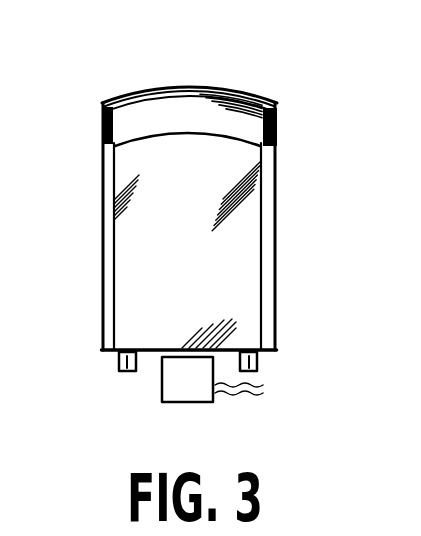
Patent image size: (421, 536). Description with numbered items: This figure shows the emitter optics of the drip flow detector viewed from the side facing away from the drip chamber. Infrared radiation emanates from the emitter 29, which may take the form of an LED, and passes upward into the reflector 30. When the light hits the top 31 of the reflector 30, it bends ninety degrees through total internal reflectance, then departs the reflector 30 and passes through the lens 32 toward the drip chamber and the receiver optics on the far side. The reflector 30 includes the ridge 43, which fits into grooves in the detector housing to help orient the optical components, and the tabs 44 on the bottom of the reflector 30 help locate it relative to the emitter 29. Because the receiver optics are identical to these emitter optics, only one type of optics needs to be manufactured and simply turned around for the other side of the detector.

The emitter 29 is at (177, 402).
The reflector 30 is at (250, 268).
The top of the reflector 31 is at (160, 107).
The lens 32 is at (127, 96).
The ridge 43 is at (105, 237).
The tabs 44 is at (119, 362).